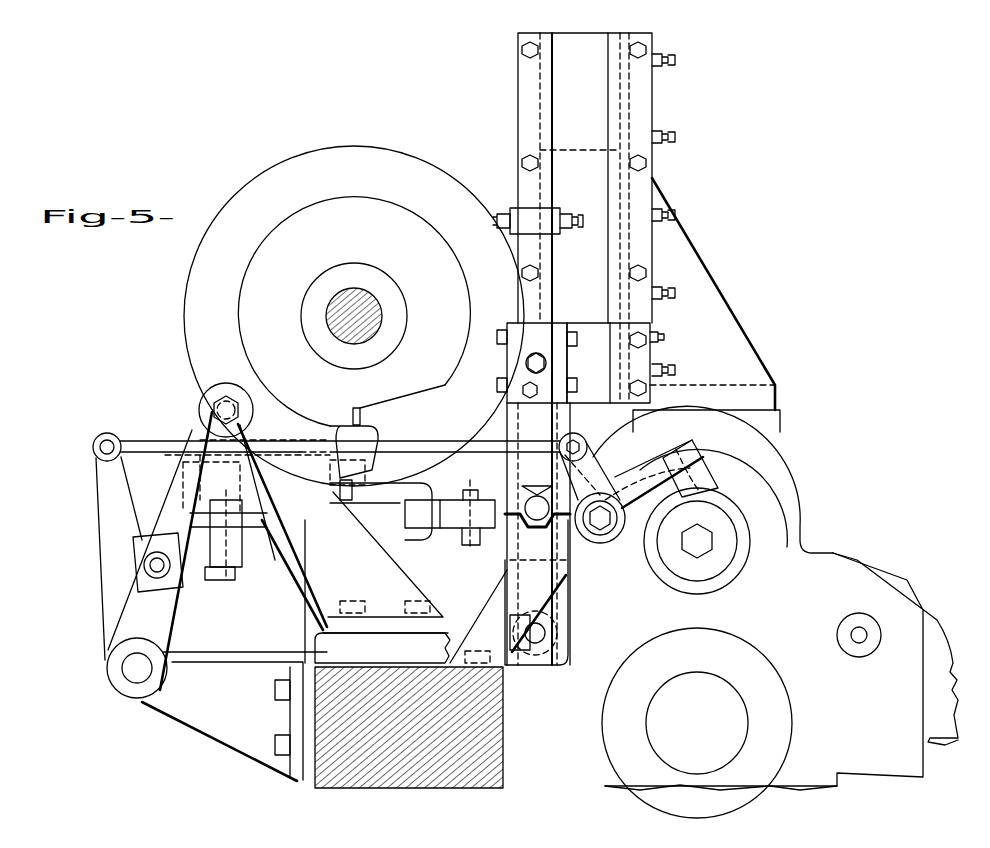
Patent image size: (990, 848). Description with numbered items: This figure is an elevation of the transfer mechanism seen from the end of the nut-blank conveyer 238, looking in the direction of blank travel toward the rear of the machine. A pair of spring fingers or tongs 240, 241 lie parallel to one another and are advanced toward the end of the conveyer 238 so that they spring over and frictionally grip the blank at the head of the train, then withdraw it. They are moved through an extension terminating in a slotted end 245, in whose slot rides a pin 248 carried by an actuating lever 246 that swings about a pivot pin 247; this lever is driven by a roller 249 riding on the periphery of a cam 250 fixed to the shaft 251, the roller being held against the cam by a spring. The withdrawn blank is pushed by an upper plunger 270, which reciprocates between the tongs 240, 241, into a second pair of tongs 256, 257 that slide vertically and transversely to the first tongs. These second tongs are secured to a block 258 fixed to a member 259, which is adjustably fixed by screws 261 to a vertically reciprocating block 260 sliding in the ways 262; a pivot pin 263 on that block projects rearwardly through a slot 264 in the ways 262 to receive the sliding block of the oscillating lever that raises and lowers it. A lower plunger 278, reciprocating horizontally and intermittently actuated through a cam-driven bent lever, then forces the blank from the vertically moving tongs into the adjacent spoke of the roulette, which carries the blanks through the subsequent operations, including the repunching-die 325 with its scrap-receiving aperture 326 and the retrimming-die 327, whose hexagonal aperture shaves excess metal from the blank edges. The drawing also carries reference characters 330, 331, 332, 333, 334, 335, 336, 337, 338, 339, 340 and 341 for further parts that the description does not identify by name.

The nut-blank conveyer 238 is at (575, 525).
The spring finger or tong 240 is at (537, 496).
The spring finger or tong 241 is at (537, 528).
The slotted end 245 is at (488, 530).
The actuating lever 246 is at (398, 490).
The pivot pin 247 is at (222, 580).
The pin 248 is at (470, 488).
The roller 249 is at (362, 479).
The cam 250 is at (354, 316).
The shaft 251 is at (354, 298).
The second tong 256 is at (520, 662).
The second tong 257 is at (556, 612).
The block 258 is at (560, 360).
The member 259 is at (567, 387).
The vertically reciprocating block 260 is at (585, 349).
The screws 261 is at (640, 338).
The vertical ways 262 is at (620, 132).
The pivot pin 263 is at (525, 363).
The slot 264 is at (612, 178).
The upper plunger 270 is at (543, 508).
The lower plunger 278 is at (545, 634).
The repunching-die 325 is at (838, 636).
The aperture 326 is at (859, 628).
The retrimming-die 327 is at (728, 543).
The lever 330 is at (652, 470).
The pawl 331 is at (705, 482).
The rod 332 is at (150, 447).
The arm 333 is at (100, 548).
The pivot 334 is at (130, 670).
The arm 335 is at (221, 551).
The link 336 is at (192, 435).
The plate 337 is at (376, 577).
The bolt 338 is at (226, 402).
The lug 339 is at (368, 440).
The disk 340 is at (354, 311).
The notch 341 is at (356, 408).